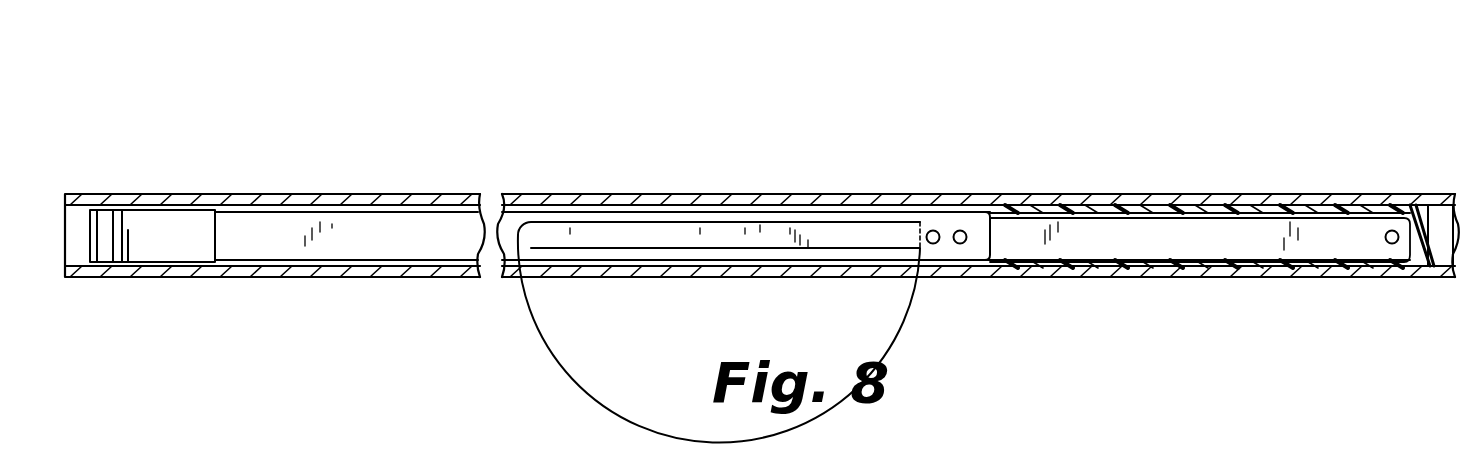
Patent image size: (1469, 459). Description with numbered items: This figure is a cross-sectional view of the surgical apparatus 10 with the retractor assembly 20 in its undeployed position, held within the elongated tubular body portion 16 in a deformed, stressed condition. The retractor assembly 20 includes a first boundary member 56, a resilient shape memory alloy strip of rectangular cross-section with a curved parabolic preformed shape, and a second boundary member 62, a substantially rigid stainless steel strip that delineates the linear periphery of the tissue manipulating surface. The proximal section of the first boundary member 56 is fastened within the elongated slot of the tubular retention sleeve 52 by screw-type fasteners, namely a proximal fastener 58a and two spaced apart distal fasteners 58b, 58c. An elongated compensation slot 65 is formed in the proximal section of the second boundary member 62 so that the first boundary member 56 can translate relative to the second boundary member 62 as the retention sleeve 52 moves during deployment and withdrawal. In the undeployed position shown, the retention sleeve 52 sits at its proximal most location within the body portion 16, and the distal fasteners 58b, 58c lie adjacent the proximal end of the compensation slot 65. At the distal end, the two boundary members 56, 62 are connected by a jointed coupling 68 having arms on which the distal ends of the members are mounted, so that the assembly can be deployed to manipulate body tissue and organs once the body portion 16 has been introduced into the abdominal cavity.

The surgical apparatus 10 is at (815, 108).
The elongated tubular body portion 16 is at (537, 189).
The retractor assembly 20 is at (307, 208).
The tubular retention sleeve 52 is at (1288, 240).
The first boundary member 56 is at (1150, 240).
The proximal fastener 58a is at (1392, 230).
The distal fastener 58b is at (962, 231).
The distal fastener 58c is at (933, 230).
The second boundary member 62 is at (362, 242).
The elongated compensation slot 65 is at (582, 236).
The jointed coupling 68 is at (158, 238).